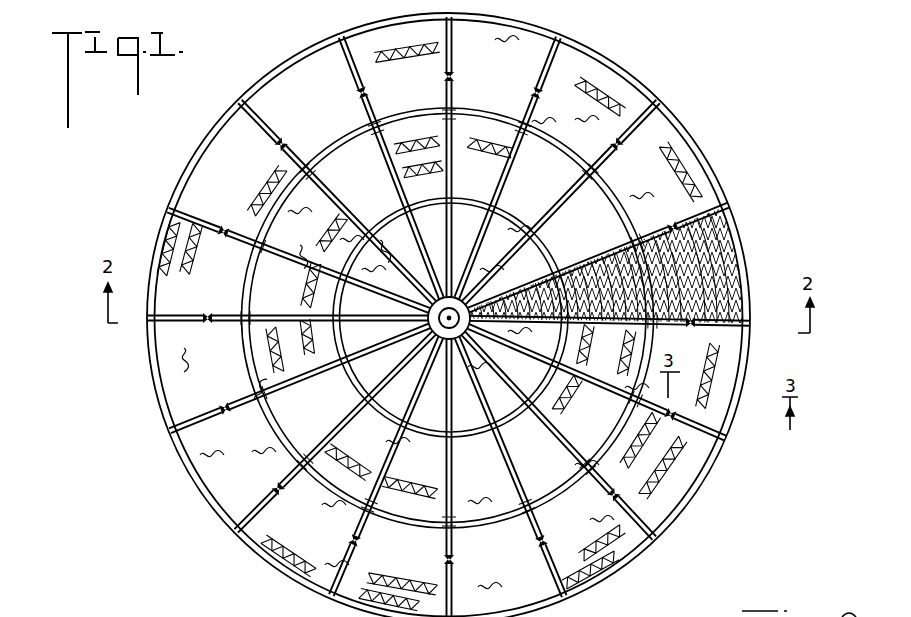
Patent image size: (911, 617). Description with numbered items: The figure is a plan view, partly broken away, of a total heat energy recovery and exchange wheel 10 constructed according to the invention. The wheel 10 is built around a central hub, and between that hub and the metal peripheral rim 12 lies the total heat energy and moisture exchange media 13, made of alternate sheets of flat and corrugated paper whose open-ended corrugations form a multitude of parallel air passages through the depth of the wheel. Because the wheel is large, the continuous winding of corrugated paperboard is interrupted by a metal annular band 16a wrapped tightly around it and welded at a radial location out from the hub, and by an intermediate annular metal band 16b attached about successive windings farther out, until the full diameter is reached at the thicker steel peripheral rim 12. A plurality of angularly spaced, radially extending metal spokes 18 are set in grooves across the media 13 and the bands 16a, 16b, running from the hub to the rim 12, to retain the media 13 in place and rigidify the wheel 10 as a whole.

The wheel 10 is at (708, 102).
The peripheral rim 12 is at (697, 148).
The total heat energy and moisture exchange media 13 is at (737, 224).
The annular band 16a is at (470, 437).
The intermediate annular metal band 16b is at (468, 528).
The spoke 18 is at (607, 384).